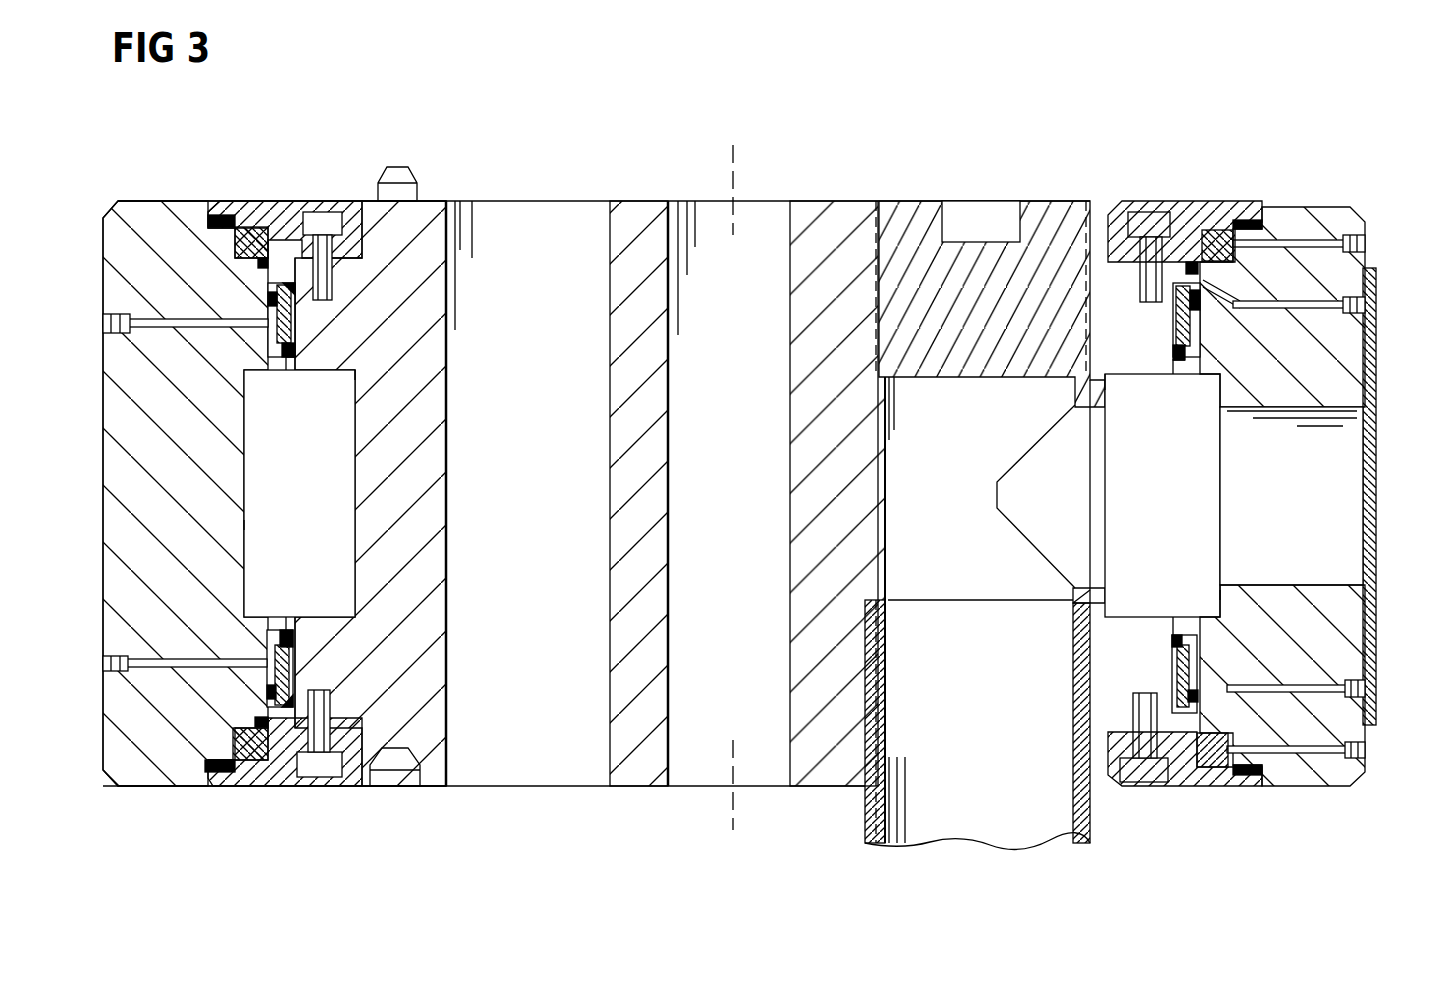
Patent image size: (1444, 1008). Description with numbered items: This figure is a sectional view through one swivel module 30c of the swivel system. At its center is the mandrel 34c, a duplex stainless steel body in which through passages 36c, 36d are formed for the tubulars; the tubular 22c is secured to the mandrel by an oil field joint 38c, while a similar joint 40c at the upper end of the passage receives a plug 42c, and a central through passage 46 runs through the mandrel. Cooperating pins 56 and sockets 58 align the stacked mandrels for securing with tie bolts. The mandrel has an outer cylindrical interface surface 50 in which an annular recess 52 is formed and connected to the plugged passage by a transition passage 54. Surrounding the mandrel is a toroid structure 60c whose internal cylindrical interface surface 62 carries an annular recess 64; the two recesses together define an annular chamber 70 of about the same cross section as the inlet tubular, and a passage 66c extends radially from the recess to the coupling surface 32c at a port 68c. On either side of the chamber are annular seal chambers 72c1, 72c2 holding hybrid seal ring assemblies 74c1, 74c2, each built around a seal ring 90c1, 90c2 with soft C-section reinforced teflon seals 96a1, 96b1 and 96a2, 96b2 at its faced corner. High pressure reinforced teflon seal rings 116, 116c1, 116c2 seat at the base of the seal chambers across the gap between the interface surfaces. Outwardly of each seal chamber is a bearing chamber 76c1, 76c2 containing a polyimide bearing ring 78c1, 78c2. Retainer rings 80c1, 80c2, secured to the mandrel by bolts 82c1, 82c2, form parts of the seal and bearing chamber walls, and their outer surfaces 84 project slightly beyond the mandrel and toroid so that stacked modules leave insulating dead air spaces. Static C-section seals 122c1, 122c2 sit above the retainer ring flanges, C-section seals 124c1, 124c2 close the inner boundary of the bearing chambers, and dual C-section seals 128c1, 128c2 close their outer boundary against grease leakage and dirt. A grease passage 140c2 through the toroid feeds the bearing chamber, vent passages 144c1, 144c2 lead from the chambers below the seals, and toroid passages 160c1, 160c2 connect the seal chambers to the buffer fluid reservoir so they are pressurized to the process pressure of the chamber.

The tubular 22c is at (1092, 828).
The swivel module 30c is at (1357, 198).
The coupling surface 32c is at (1378, 342).
The mandrel member 34c is at (440, 197).
The through passage 36c is at (976, 454).
The through passage 36d is at (447, 762).
The oil field joint 38c is at (865, 760).
The joint 40c is at (875, 248).
The plug 42c is at (912, 210).
The central through passage 46 is at (668, 762).
The outer cylindrical interface surface 50 is at (288, 622).
The annular recess 52 is at (357, 433).
The transition passage 54 is at (1082, 586).
The pin 56 is at (408, 172).
The socket 58 is at (392, 772).
The toroid structure 60c is at (118, 212).
The internal cylindrical interface surface 62 is at (290, 368).
The annular recess 64 is at (245, 524).
The passage 66c is at (1275, 585).
The port 68c is at (1375, 585).
The annular chamber 70 is at (308, 504).
The annular seal chamber 72c1 is at (1170, 313).
The annular seal chamber 72c2 is at (1168, 675).
The hybrid seal ring assembly 74c1 is at (1204, 320).
The hybrid seal ring assembly 74c2 is at (1200, 668).
The bearing chamber 76c1 is at (1195, 252).
The bearing chamber 76c2 is at (1205, 768).
The annular ring bearing 78c1 is at (256, 238).
The annular ring bearing 78c2 is at (247, 762).
The retainer ring 80c1 is at (272, 210).
The retainer ring 80c2 is at (278, 780).
The bolt 82c1 is at (323, 222).
The bolt 82c2 is at (320, 775).
The outer surface 84 is at (228, 200).
The seal ring 90c1 is at (296, 322).
The seal ring 90c2 is at (295, 665).
The C-section reinforced teflon seal 96a1 is at (296, 285).
The C-section reinforced teflon seal 96a2 is at (294, 700).
The C-section reinforced teflon seal 96b1 is at (272, 298).
The C-section reinforced teflon seal 96b2 is at (268, 688).
The high pressure reinforced teflon seal ring 116 is at (1173, 352).
The high pressure reinforced teflon seal ring 116c1 is at (296, 350).
The high pressure reinforced teflon seal ring 116c2 is at (294, 640).
The C-section static seal 122c1 is at (296, 266).
The C-section static seal 122c2 is at (296, 728).
The C-section seal 124c1 is at (258, 262).
The C-section seal 124c2 is at (256, 722).
The dual C-section seal 128c1 is at (213, 220).
The dual C-section seal 128c2 is at (208, 766).
The grease passage 140c2 is at (1255, 224).
The vent passage 144c1 is at (1320, 308).
The vent passage 144c2 is at (1310, 684).
The toroid passage 160c1 is at (187, 328).
The toroid passage 160c2 is at (155, 660).